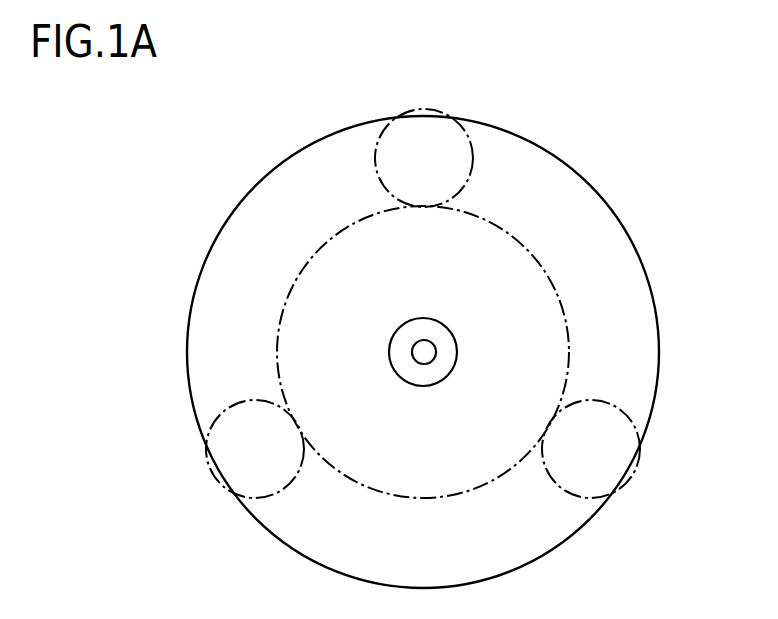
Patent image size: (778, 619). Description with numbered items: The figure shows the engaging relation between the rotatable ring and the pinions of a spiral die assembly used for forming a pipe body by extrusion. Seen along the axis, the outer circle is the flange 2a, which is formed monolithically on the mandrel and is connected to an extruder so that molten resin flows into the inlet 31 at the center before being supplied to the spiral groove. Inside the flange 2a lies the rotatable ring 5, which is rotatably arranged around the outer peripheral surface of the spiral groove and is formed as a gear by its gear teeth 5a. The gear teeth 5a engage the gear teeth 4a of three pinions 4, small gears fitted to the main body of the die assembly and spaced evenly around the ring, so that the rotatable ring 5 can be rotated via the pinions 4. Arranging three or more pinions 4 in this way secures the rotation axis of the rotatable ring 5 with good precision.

The flange 2a is at (277, 168).
The pinion 4 is at (432, 321).
The gear teeth of pinion 4a is at (427, 108).
The rotatable ring 5 is at (457, 325).
The gear teeth of rotatable ring 5a is at (507, 230).
The inlet 31 is at (437, 350).